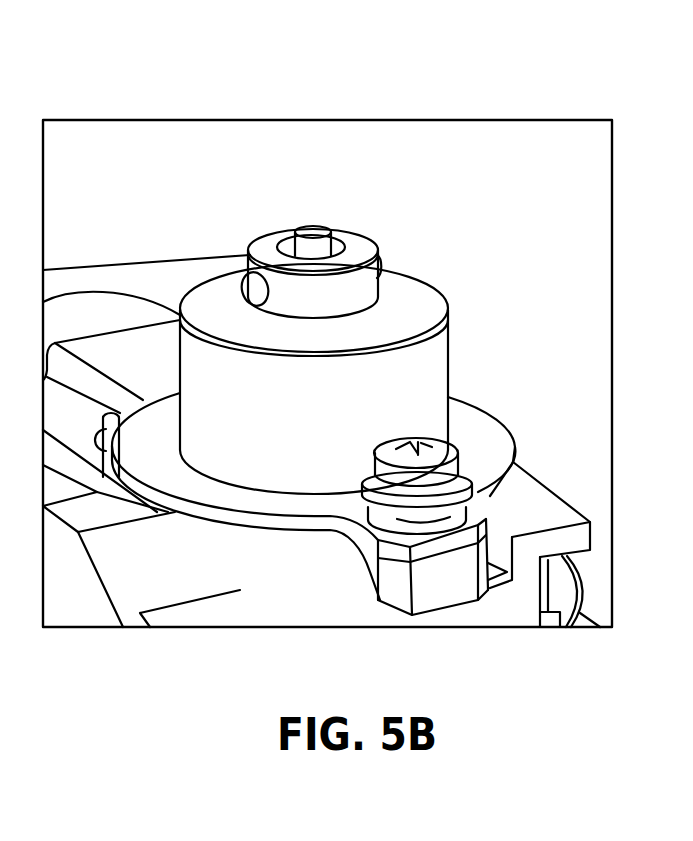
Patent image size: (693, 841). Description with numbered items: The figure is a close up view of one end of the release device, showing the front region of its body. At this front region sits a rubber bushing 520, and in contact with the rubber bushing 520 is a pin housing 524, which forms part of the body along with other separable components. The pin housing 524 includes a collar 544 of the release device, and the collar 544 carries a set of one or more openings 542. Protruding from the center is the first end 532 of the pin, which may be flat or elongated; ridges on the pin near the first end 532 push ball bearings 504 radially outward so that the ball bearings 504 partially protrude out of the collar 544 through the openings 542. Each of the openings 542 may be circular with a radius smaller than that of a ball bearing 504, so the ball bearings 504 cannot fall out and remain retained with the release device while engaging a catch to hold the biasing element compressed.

The ball bearing 504 is at (240, 273).
The rubber bushing 520 is at (250, 435).
The pin housing 524 is at (370, 278).
The first end 532 is at (315, 215).
The openings 542 is at (263, 278).
The collar 544 is at (353, 230).